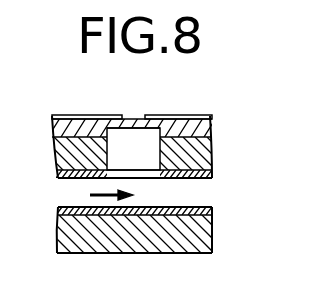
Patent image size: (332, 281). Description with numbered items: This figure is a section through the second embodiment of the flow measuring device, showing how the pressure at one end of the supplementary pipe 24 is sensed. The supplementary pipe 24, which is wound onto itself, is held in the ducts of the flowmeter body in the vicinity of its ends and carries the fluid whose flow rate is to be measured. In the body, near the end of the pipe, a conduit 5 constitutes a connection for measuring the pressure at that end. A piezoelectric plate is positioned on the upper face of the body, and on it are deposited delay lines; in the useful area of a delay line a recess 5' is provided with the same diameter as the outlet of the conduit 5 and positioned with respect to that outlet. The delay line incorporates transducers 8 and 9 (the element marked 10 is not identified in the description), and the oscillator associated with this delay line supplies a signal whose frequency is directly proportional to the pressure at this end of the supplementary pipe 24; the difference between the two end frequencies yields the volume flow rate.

The conduit 5 is at (139, 124).
The recess 5' is at (133, 106).
The transducer 8 is at (110, 124).
The transducer 9 is at (188, 115).
The electrode plate 10 is at (87, 114).
The supplementary pipe 24 is at (203, 193).